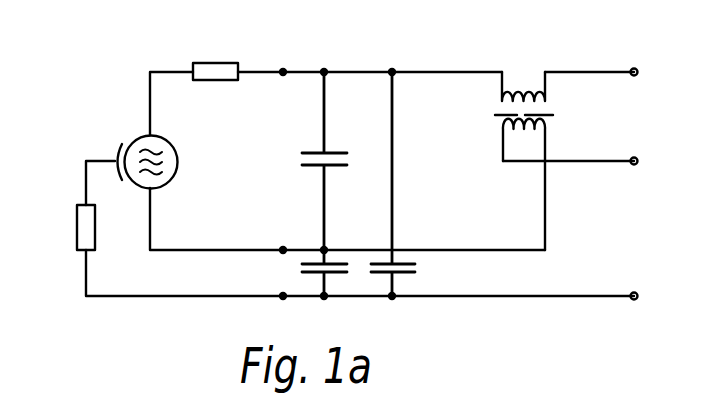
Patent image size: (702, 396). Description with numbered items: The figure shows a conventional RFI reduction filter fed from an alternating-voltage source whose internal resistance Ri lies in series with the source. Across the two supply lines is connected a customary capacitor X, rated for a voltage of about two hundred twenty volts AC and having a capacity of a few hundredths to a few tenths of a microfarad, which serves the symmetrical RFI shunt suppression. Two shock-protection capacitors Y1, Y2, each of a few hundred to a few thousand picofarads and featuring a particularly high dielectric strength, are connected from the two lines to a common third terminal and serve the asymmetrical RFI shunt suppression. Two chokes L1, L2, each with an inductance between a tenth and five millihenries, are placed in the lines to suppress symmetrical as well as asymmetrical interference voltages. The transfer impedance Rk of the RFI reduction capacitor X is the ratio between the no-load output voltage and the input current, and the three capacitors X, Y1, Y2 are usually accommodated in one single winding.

The internal resistance of generator Ri is at (215, 56).
The transfer impedance Rk is at (66, 227).
The capacitor X is at (306, 161).
The shock-protection capacitor Y1 is at (305, 273).
The shock-protection capacitor Y2 is at (413, 184).
The choke L1 is at (538, 94).
The choke L2 is at (542, 184).